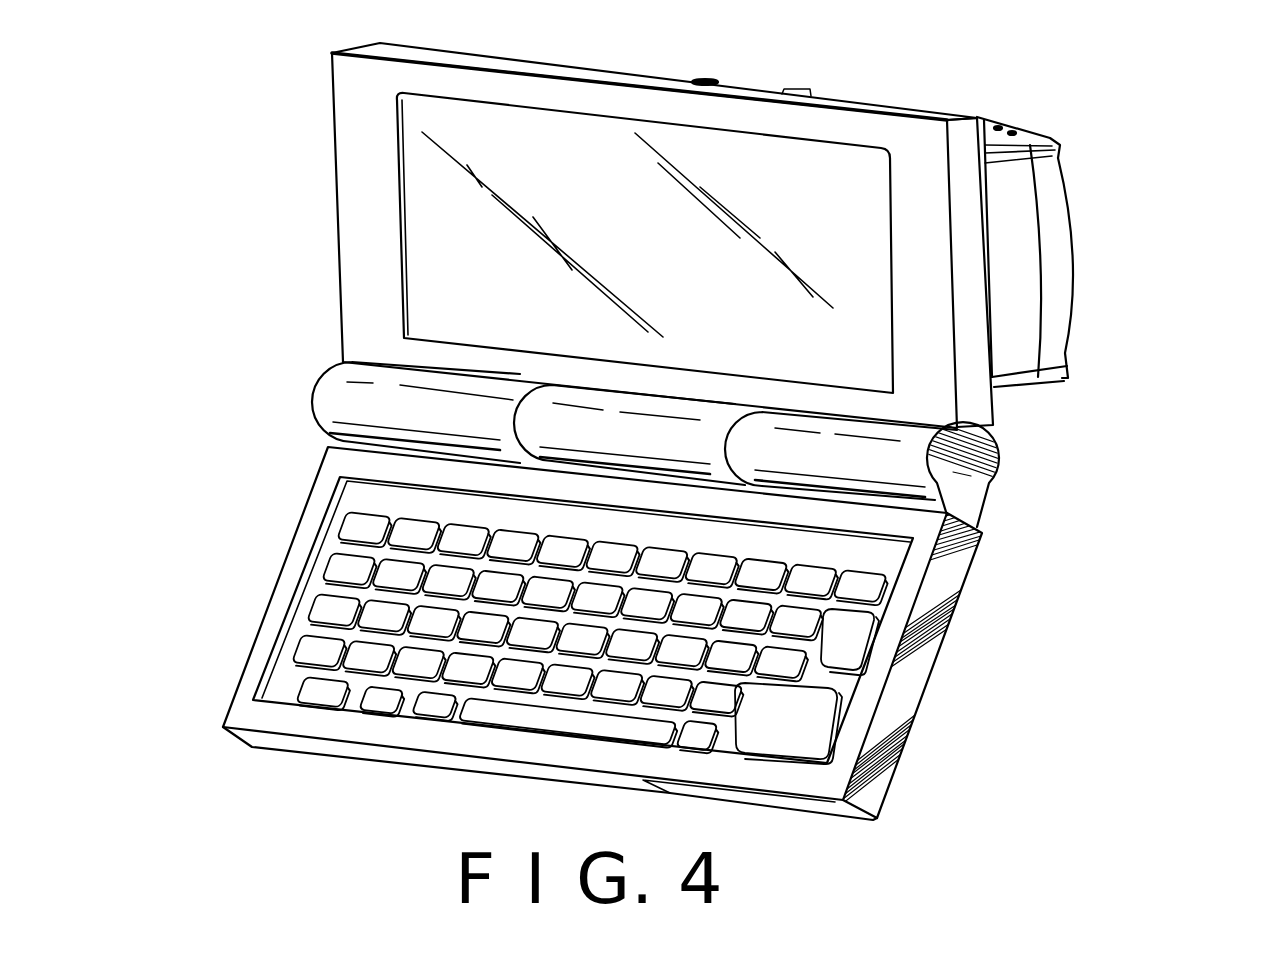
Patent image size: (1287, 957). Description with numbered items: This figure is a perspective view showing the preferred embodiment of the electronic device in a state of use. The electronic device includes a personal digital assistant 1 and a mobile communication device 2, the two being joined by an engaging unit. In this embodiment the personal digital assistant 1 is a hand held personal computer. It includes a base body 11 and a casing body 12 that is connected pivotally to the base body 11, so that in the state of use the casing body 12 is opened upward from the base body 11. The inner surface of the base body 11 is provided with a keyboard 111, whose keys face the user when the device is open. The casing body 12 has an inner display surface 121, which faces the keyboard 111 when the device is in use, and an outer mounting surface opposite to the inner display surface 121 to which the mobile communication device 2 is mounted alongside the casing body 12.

The personal digital assistant 1 is at (666, 431).
The base body 11 is at (643, 633).
The keyboard 111 is at (400, 580).
The casing body 12 is at (679, 252).
The inner display surface 121 is at (460, 207).
The mobile communication device 2 is at (1100, 305).